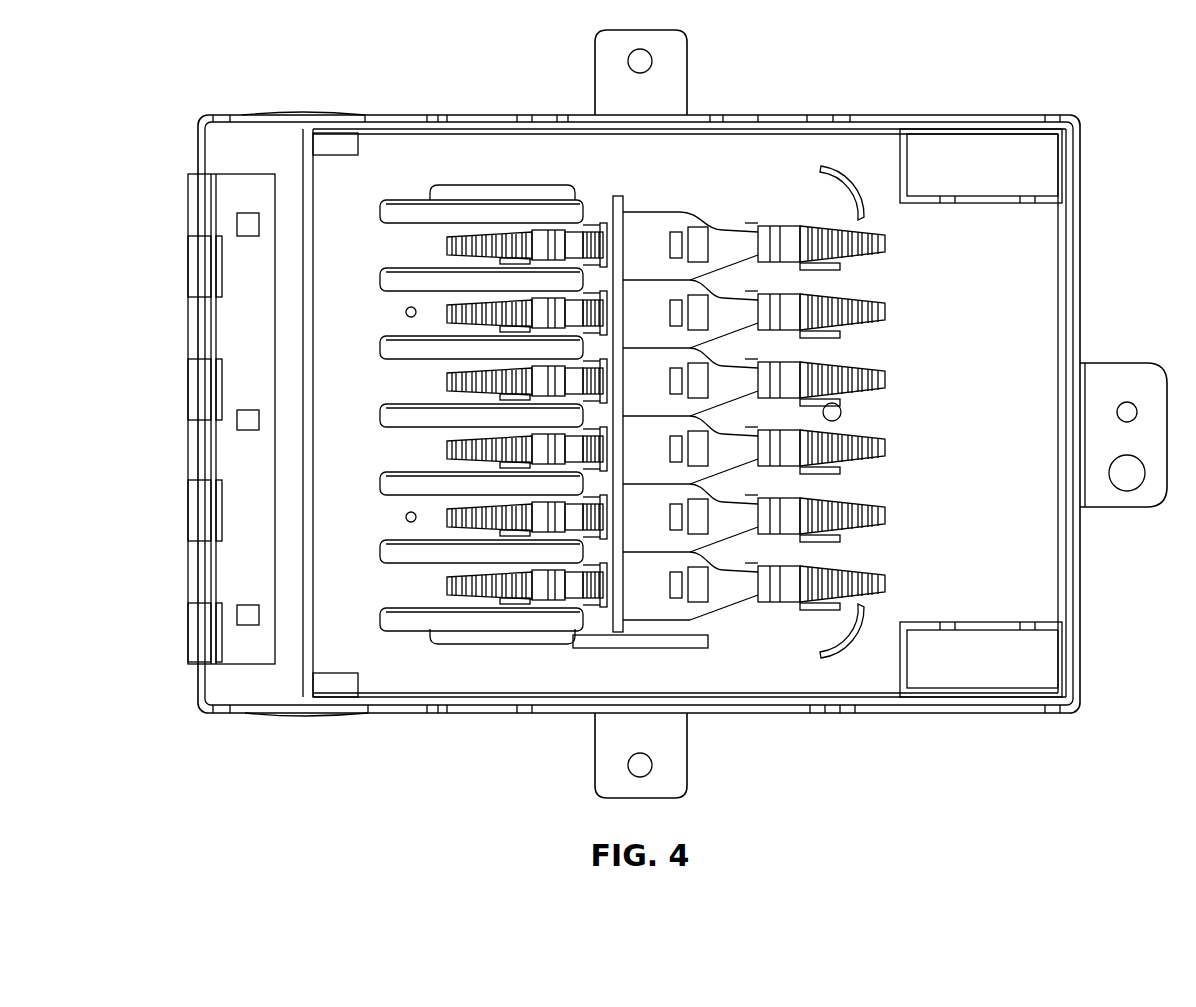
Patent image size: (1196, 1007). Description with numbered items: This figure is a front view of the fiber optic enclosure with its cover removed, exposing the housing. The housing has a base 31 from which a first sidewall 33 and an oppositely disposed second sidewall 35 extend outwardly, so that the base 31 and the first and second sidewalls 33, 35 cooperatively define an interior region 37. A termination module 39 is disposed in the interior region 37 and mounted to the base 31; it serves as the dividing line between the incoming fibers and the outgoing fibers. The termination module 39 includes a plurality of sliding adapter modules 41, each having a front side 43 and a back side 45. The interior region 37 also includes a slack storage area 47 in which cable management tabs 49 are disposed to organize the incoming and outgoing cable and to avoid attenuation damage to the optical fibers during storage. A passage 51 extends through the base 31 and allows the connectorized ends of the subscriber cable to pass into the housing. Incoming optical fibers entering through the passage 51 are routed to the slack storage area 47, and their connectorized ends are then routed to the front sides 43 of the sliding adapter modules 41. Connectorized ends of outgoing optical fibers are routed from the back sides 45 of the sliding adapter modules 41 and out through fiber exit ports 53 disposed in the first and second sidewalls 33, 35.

The base 31 is at (960, 287).
The first sidewall 33 is at (777, 713).
The second sidewall 35 is at (776, 112).
The interior region 37 is at (483, 147).
The termination module 39 is at (575, 662).
The sliding adapter modules 41 is at (648, 222).
The front sides 43 is at (720, 224).
The back sides 45 is at (565, 233).
The slack storage area 47 is at (1030, 340).
The cable management tabs 49 is at (848, 175).
The passage 51 is at (841, 412).
The fiber exit ports 53 is at (985, 115).